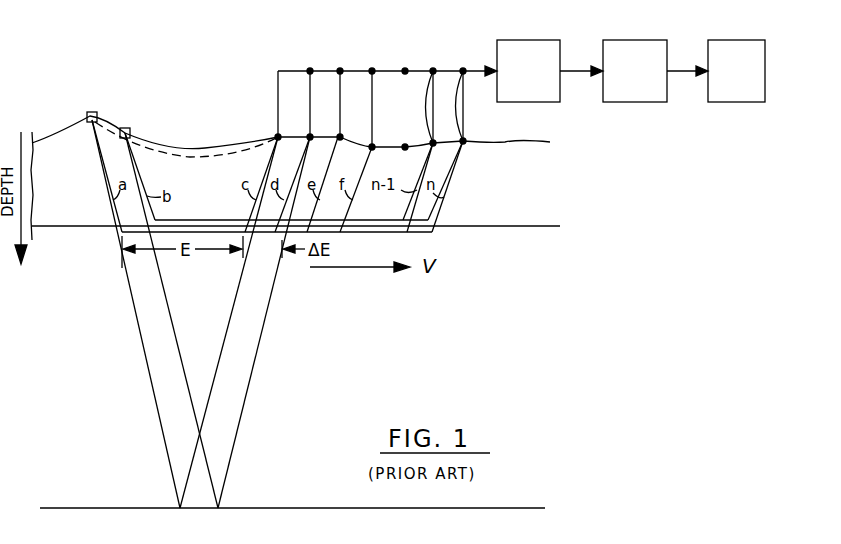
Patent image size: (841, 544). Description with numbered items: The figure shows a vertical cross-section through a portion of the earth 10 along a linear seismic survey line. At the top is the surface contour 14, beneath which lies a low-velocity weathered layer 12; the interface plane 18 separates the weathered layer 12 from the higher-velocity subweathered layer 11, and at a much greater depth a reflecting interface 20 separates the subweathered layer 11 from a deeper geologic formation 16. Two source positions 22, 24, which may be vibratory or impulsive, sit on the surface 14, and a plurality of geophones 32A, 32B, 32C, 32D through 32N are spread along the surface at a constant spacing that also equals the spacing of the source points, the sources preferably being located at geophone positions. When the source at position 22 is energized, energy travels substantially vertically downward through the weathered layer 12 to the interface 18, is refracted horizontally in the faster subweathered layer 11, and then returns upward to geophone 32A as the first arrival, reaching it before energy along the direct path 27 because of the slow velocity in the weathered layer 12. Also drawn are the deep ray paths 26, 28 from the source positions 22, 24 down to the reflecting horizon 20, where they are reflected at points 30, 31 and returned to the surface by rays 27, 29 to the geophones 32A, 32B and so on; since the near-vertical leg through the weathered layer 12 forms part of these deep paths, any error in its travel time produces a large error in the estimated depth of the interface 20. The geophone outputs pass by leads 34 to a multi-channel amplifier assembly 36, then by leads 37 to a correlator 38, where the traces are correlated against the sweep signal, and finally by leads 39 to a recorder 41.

The earth 10 is at (69, 97).
The subweathered layer 11 is at (80, 334).
The weathered layer 12 is at (72, 192).
The surface contour 14 is at (38, 142).
The geologic formation 16 is at (111, 536).
The interface plane 18 is at (50, 229).
The reflecting interface 20 is at (77, 508).
The source position 22 is at (88, 112).
The source position 24 is at (121, 128).
The ray path 26 is at (152, 395).
The ray path 27 is at (158, 152).
The ray path 28 is at (170, 323).
The ray path 29 is at (270, 320).
The reflection point 30 is at (181, 524).
The reflection point 31 is at (219, 524).
The geophone 32A is at (277, 133).
The geophone 32B is at (311, 133).
The geophone 32C is at (341, 133).
The geophone 32D is at (374, 143).
The geophone 32N is at (460, 67).
The leads 34 is at (300, 71).
The multi-channel amplifier assembly 36 is at (515, 40).
The leads 37 is at (568, 67).
The correlator 38 is at (618, 40).
The leads 39 is at (677, 67).
The recorder 41 is at (723, 40).